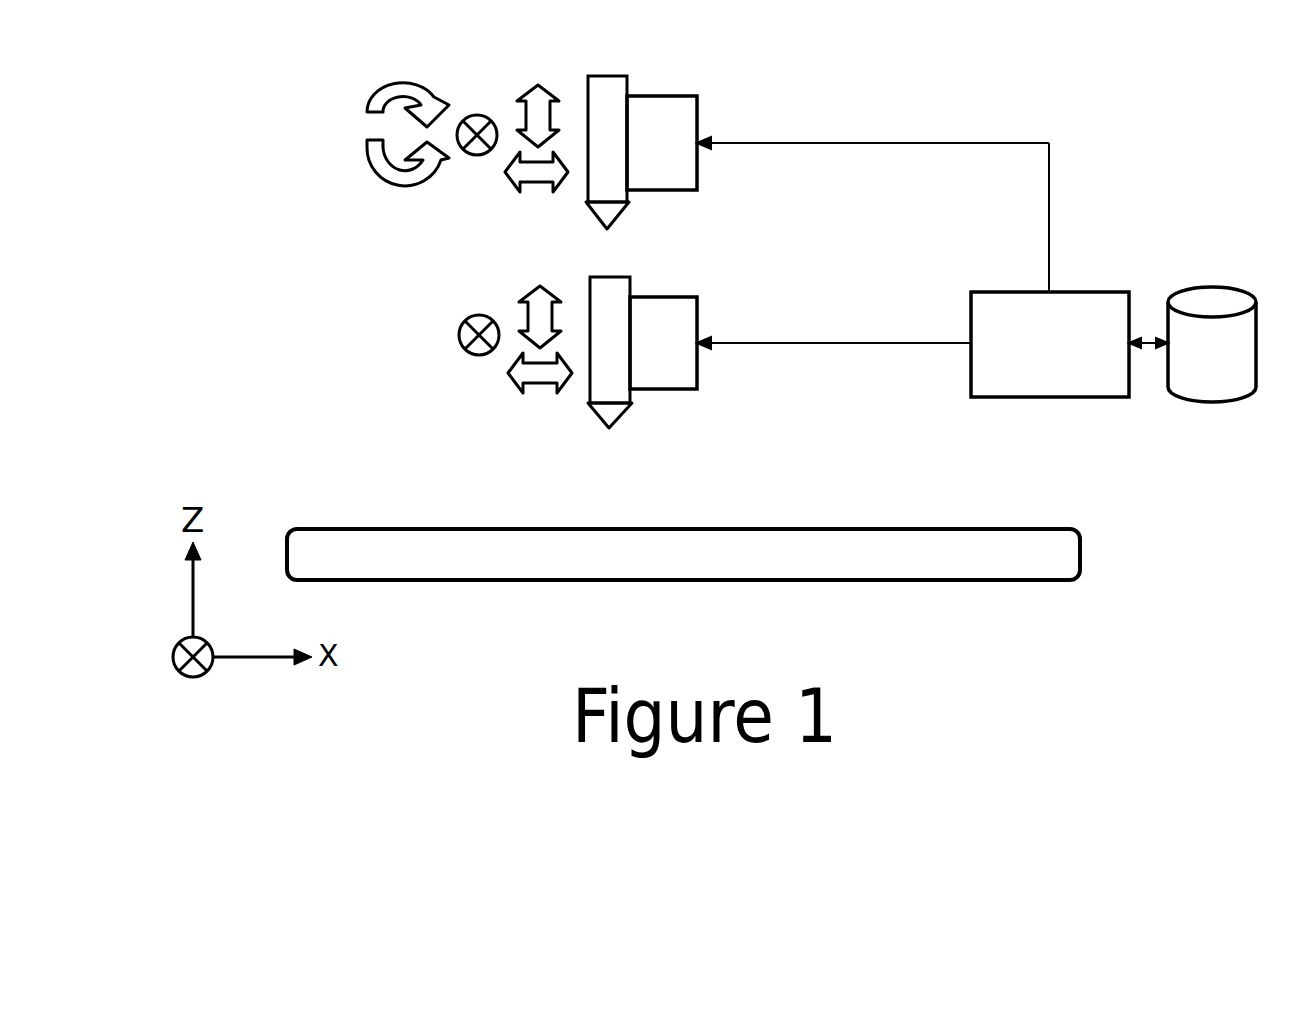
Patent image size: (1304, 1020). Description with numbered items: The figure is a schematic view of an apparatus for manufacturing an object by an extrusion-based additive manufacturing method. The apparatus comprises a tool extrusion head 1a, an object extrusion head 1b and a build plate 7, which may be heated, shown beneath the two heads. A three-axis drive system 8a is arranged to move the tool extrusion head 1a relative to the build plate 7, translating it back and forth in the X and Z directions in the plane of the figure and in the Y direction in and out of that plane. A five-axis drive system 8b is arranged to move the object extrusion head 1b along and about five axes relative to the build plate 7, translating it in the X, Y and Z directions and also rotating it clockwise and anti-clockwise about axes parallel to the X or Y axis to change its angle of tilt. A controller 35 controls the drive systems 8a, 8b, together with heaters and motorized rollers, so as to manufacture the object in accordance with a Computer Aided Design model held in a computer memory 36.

The tool extrusion head 1a is at (630, 403).
The object extrusion head 1b is at (627, 202).
The 3-axis drive system 8a is at (663, 343).
The 5-axis drive system 8b is at (662, 143).
The controller 35 is at (932, 267).
The computer memory 36 is at (1212, 344).
The build plate 7 is at (303, 550).